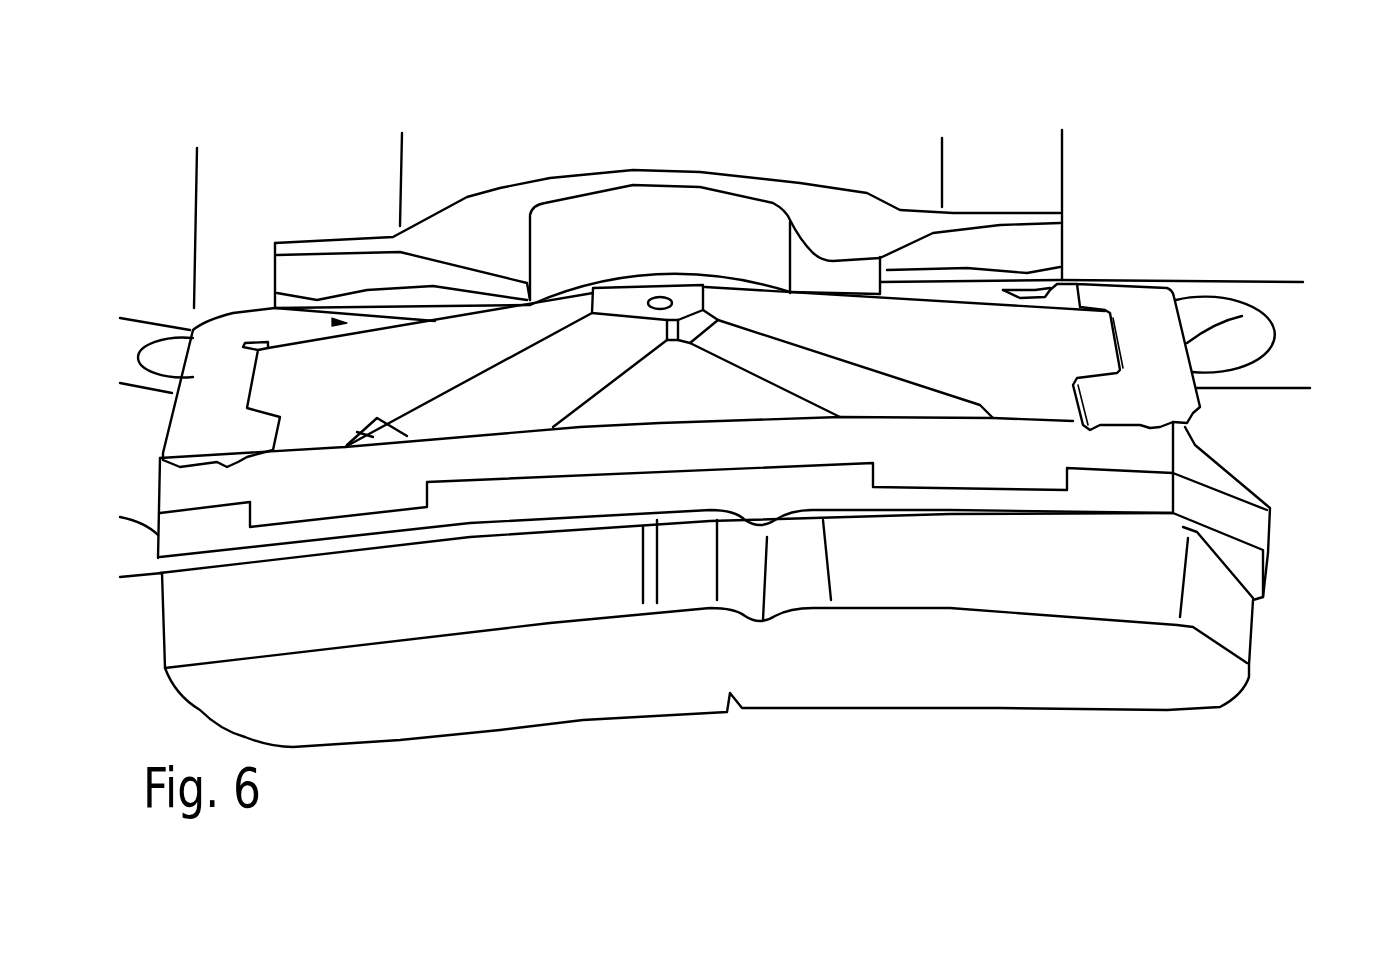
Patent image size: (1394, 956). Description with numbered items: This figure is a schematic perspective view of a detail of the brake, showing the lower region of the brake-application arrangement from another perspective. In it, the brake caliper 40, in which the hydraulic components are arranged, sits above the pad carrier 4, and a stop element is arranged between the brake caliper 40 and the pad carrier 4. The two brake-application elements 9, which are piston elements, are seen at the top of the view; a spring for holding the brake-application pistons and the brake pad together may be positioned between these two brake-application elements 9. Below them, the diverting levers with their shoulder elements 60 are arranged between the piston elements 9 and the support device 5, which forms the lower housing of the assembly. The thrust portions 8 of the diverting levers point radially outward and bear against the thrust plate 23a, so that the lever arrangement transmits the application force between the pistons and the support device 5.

The brake caliper 40 is at (858, 168).
The brake-application element 9 is at (312, 277).
The shoulder element 60 is at (218, 385).
The thrust plate 23a is at (733, 321).
The thrust portion 8 is at (740, 342).
The pad carrier 4 is at (272, 501).
The support device 5 is at (1168, 712).